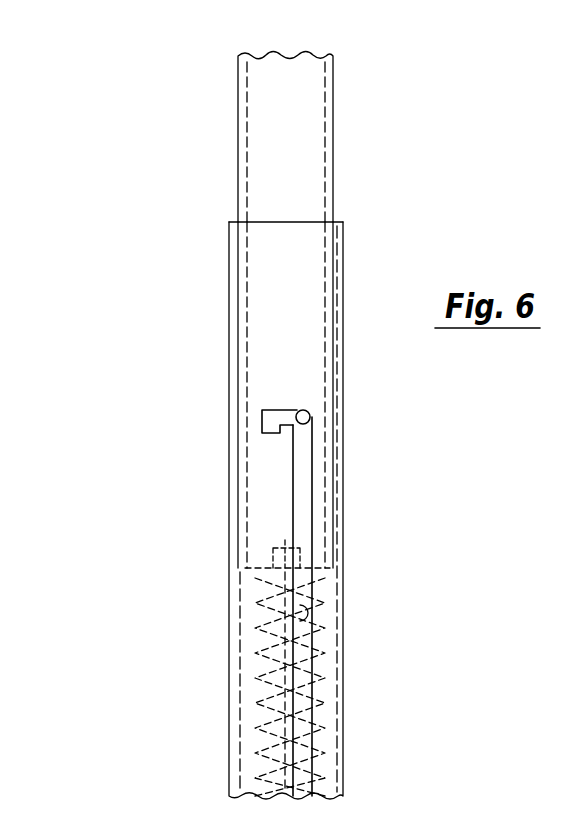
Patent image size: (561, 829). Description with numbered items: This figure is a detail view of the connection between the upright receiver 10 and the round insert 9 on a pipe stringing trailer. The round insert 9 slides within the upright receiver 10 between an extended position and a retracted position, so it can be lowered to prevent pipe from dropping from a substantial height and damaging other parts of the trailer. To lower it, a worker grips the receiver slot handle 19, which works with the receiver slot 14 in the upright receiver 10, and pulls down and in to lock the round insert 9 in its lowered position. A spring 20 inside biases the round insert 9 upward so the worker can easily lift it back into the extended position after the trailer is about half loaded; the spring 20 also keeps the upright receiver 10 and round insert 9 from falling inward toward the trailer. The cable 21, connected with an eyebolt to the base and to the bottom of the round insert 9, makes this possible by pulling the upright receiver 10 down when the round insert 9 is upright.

The round insert 9 is at (295, 132).
The upright receiver 10 is at (270, 280).
The receiver slot 14 is at (308, 480).
The receiver slot handle 19 is at (297, 410).
The spring 20 is at (262, 632).
The cable 21 is at (287, 738).